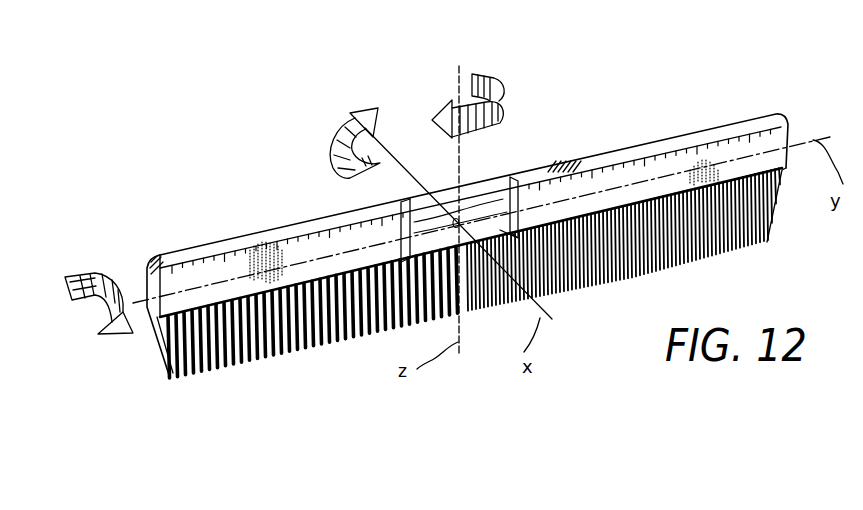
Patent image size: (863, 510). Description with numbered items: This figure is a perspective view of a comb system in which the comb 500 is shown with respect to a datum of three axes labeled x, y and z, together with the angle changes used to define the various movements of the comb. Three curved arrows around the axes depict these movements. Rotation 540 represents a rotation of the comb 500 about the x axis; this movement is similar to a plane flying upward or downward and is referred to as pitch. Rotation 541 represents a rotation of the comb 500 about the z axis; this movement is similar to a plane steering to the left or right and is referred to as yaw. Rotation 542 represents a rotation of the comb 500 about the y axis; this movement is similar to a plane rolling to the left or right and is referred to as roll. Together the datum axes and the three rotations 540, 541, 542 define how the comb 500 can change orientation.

The comb 500 is at (227, 192).
The rotation 540 is at (366, 110).
The rotation 541 is at (444, 113).
The rotation 542 is at (110, 327).